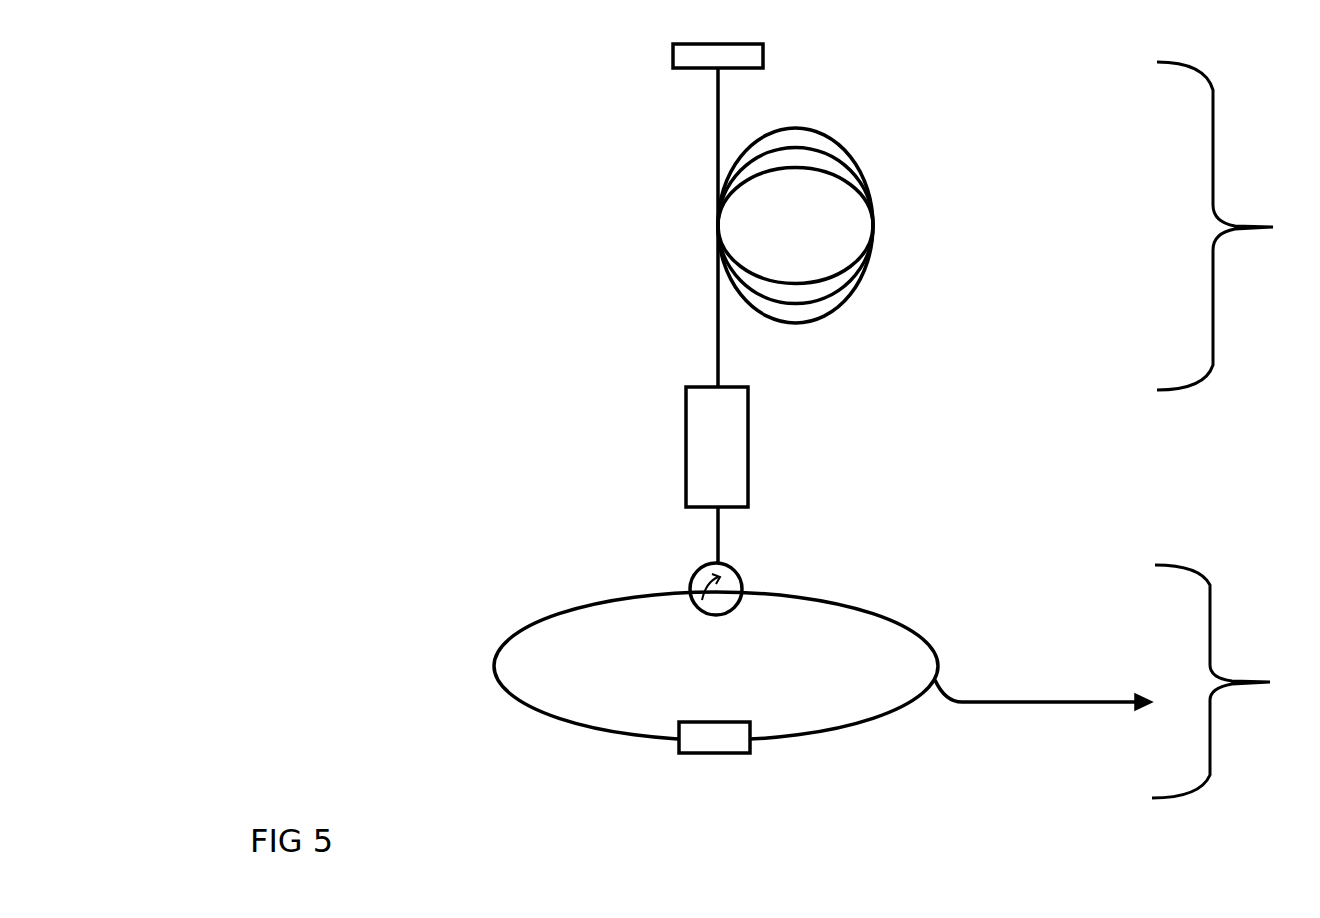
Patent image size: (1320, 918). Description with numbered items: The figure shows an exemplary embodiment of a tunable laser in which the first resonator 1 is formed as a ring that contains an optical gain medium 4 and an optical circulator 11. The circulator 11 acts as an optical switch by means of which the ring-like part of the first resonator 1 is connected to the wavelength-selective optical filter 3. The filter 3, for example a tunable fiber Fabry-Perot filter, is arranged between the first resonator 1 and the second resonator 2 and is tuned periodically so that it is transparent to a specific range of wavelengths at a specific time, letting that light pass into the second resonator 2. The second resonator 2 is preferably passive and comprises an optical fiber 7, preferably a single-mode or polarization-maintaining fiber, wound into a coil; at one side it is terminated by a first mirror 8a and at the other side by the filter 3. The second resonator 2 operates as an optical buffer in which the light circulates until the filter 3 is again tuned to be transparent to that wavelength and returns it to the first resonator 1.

The first mirror 8a is at (722, 58).
The optical fiber 7 is at (862, 160).
The wavelength-selective optical filter 3 is at (700, 428).
The optical circulator 11 is at (723, 587).
The optical gain medium 4 is at (698, 734).
The second resonator 2 is at (1229, 226).
The first resonator 1 is at (1229, 681).